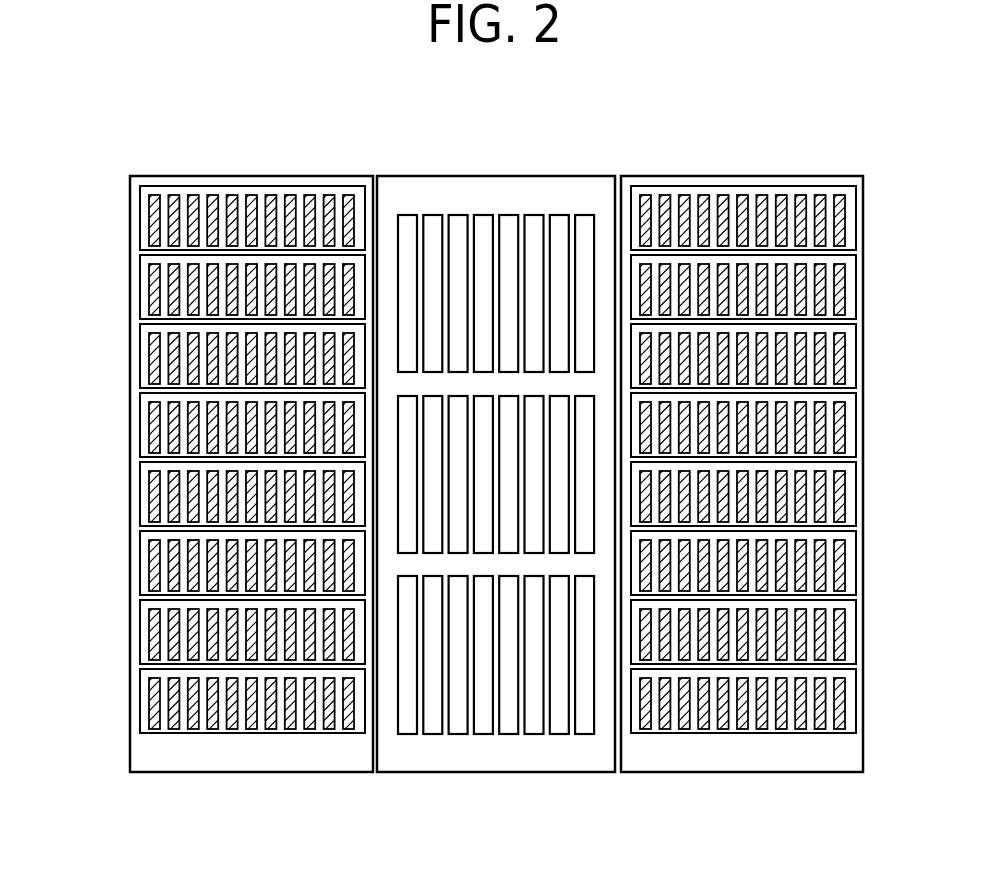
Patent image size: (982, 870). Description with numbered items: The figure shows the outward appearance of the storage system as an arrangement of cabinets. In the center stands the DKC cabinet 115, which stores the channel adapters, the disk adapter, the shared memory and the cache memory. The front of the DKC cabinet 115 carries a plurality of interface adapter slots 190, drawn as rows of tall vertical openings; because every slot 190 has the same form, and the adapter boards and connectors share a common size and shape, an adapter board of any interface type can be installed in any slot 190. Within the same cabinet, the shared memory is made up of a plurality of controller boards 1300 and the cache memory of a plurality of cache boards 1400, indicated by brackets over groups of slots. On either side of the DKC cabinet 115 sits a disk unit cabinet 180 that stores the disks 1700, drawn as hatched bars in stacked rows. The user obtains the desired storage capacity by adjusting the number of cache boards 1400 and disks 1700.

The disk unit cabinet 180 is at (195, 176).
The DKC cabinet 115 is at (465, 176).
The disk 1700 is at (149, 210).
The interface adapter slot 190 is at (406, 215).
The controller board 1300 is at (488, 394).
The cache board 1400 is at (505, 394).